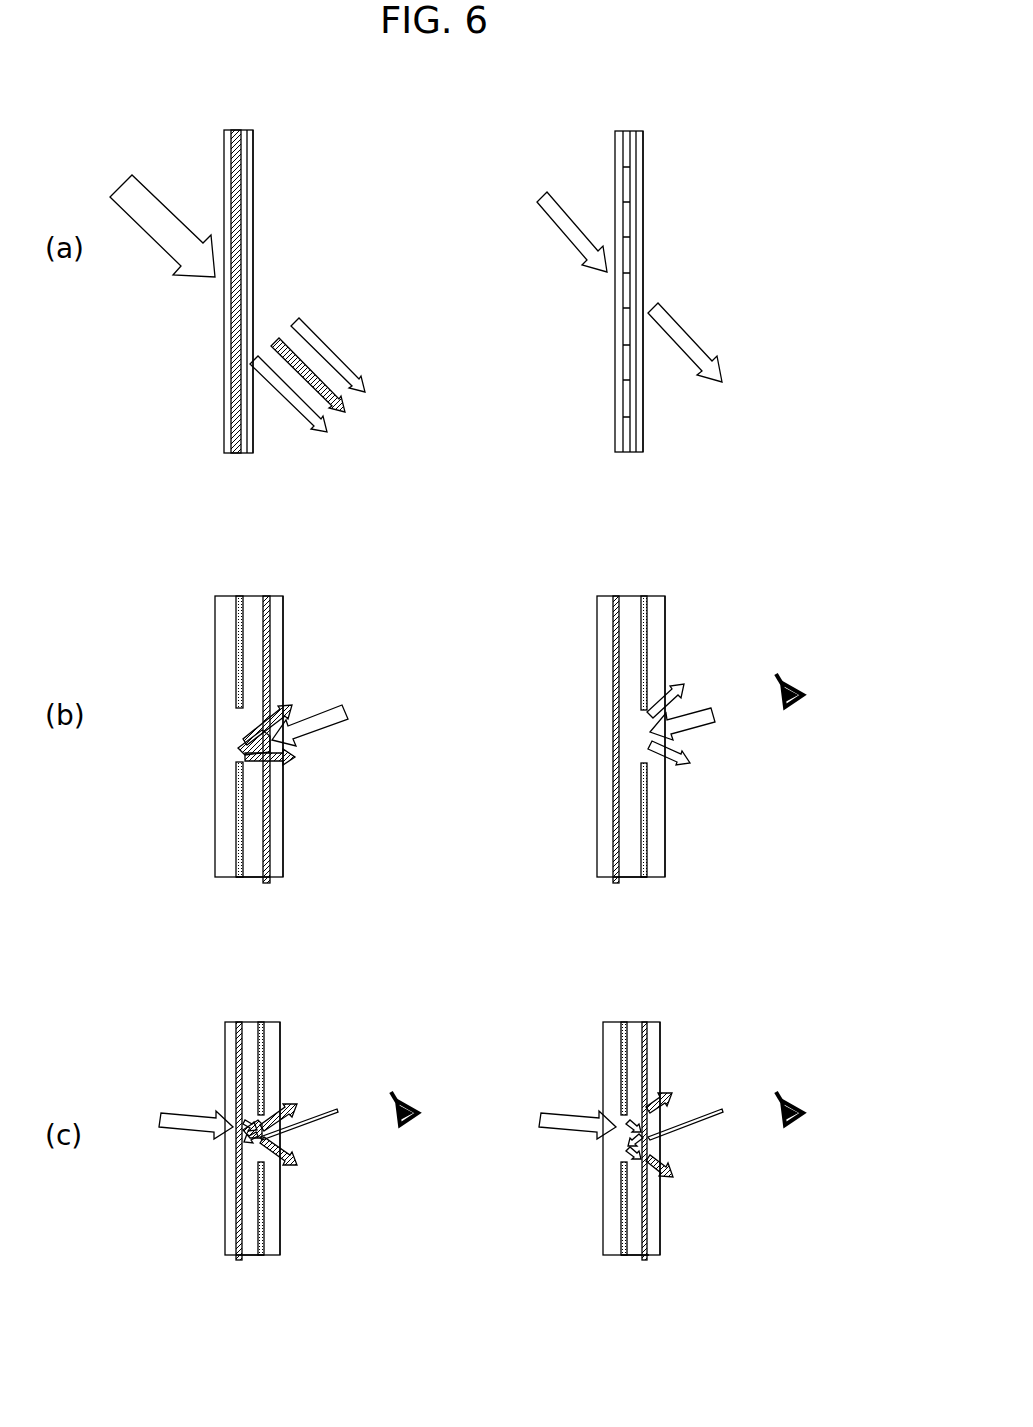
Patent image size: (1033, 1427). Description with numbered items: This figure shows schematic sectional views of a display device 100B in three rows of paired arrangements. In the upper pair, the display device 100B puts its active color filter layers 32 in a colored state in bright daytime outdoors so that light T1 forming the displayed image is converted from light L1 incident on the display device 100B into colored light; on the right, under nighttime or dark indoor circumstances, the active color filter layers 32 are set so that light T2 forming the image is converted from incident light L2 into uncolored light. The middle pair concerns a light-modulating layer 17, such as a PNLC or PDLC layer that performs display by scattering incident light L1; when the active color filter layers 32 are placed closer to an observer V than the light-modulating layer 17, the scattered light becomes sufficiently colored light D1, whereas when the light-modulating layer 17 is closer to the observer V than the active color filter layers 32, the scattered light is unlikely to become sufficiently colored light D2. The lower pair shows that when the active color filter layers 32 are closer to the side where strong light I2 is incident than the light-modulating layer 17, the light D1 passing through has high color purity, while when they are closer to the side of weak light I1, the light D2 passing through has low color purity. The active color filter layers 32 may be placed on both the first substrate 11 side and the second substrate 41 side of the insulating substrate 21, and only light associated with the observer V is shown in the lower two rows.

The display device 100B is at (484, 674).
The second substrate 41 is at (417, 684).
The active color filter layers 32 is at (440, 663).
The light-modulating layer 17 is at (453, 692).
The first substrate 11 is at (476, 684).
The insulating substrate 21 is at (424, 1076).
The incident light L1 is at (409, 458).
The incident light L2 is at (540, 205).
The image-forming light T1 is at (322, 350).
The image-forming light T2 is at (712, 365).
The colored light D1 is at (291, 947).
The insufficiently colored light D2 is at (682, 942).
The weak incident light I1 is at (493, 1136).
The strong incident light I2 is at (387, 1142).
The observer V is at (617, 908).